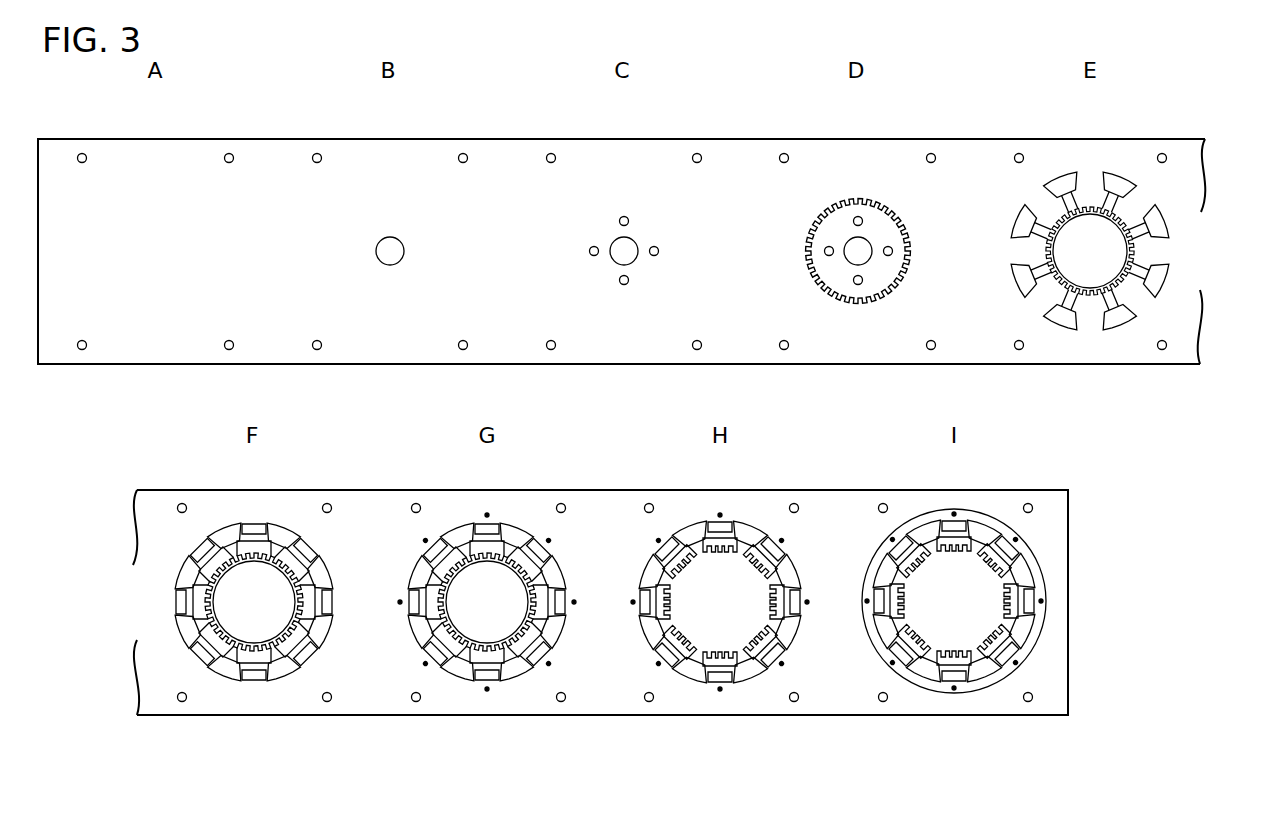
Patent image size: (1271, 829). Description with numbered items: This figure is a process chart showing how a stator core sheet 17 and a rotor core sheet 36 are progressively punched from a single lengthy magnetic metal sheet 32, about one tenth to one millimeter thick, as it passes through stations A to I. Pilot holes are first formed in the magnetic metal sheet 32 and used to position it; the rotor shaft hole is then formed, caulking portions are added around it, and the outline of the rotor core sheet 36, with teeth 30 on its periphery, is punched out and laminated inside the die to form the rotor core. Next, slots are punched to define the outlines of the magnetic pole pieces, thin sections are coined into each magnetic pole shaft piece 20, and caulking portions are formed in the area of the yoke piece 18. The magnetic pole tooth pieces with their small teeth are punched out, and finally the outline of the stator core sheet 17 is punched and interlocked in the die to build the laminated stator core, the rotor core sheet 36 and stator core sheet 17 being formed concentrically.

The stator core sheet 17 is at (1038, 538).
The yoke piece 18 is at (914, 522).
The magnetic pole shaft piece 20 is at (1010, 652).
The teeth 30 is at (858, 303).
The magnetic metal sheet 32 is at (648, 145).
The rotor core sheet 36 is at (878, 226).